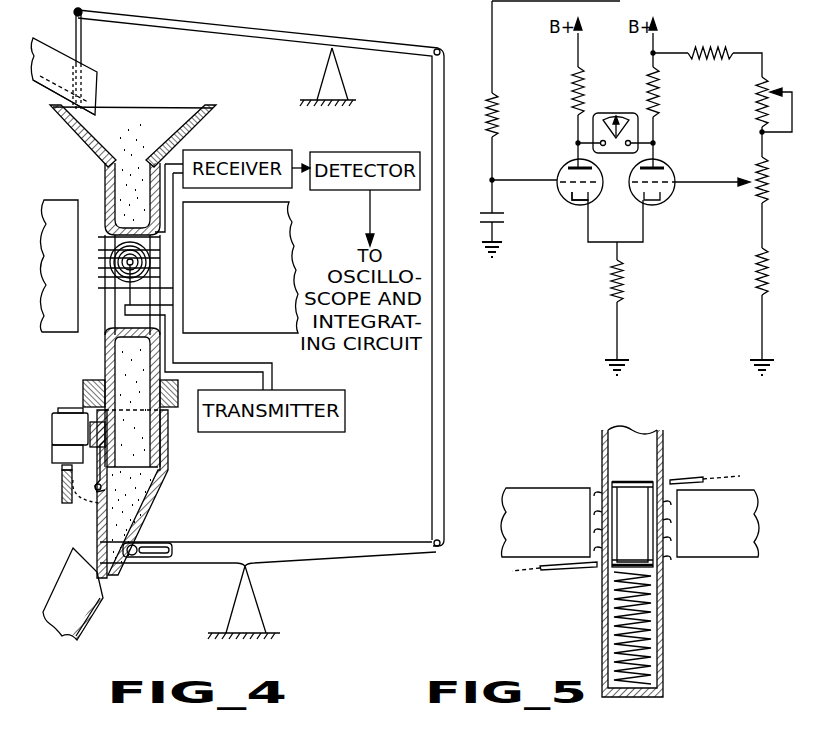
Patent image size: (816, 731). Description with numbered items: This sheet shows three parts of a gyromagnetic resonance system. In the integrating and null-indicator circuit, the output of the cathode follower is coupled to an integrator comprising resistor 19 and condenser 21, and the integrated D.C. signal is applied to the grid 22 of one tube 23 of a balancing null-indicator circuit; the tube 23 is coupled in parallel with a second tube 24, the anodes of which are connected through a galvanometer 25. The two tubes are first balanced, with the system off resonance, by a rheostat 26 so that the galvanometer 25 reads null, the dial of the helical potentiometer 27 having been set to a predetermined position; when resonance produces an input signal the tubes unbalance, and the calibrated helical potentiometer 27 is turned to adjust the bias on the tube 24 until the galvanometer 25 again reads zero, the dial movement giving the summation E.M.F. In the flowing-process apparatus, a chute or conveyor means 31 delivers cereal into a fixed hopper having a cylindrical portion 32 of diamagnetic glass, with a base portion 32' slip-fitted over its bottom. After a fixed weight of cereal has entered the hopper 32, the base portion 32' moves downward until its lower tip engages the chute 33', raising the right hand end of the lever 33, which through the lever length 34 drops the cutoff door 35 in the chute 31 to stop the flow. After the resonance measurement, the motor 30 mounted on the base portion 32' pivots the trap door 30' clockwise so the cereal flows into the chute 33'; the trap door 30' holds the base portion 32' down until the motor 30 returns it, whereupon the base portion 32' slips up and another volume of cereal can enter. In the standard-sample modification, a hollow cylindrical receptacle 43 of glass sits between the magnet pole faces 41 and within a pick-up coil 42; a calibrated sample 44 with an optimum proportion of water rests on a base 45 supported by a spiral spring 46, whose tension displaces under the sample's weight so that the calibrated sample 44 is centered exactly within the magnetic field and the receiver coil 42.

In FIG. 3, the resistor 19 is at (497, 135).
In FIG. 3, the condenser 21 is at (504, 222).
In FIG. 3, the grid 22 is at (558, 174).
In FIG. 3, the tube 23 is at (568, 198).
In FIG. 3, the second tube 24 is at (672, 190).
In FIG. 3, the galvanometer 25 is at (636, 116).
In FIG. 3, the rheostat 26 is at (768, 82).
In FIG. 3, the helical potentiometer 27 is at (768, 190).
In FIG. 4, the motor 30 is at (71, 444).
In FIG. 4, the trap door 30' is at (72, 490).
In FIG. 4, the chute or conveyor means 31 is at (64, 68).
In FIG. 4, the cylindrical portion of hopper 32 is at (161, 247).
In FIG. 4, the base portion 32' is at (154, 494).
In FIG. 4, the lever 33 is at (270, 583).
In FIG. 4, the chute 33' is at (92, 594).
In FIG. 4, the lever length 34 is at (319, 36).
In FIG. 4, the cutoff door 35 is at (82, 44).
In FIG. 5, the magnet pole faces 41 is at (575, 490).
In FIG. 5, the pick-up coil 42 is at (665, 560).
In FIG. 5, the hollow cylindrical receptacle 43 is at (660, 470).
In FIG. 5, the calibrated sample 44 is at (618, 482).
In FIG. 5, the base 45 is at (600, 570).
In FIG. 5, the spiral spring 46 is at (620, 613).